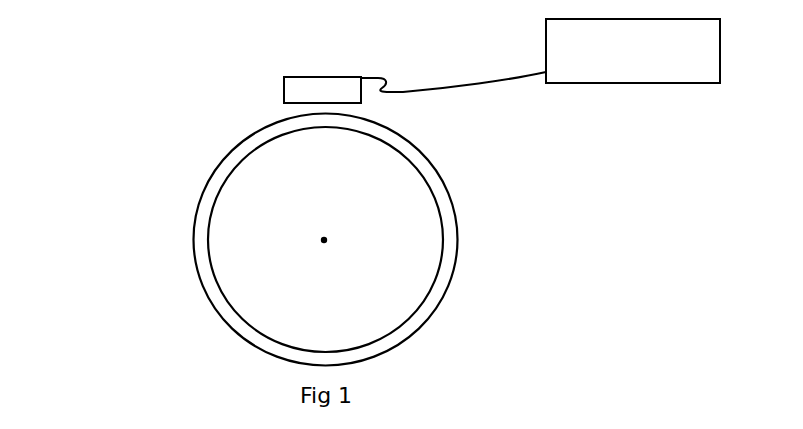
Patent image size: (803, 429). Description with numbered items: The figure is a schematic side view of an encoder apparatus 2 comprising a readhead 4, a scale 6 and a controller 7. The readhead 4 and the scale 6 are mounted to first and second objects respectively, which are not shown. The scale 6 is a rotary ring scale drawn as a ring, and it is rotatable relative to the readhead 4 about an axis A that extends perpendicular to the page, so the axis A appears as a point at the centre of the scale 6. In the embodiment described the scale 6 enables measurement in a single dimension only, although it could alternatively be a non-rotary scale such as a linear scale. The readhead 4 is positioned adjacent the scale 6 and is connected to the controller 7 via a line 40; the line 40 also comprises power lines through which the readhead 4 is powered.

The encoder apparatus 2 is at (128, 68).
The readhead 4 is at (279, 88).
The scale 6 is at (430, 146).
The controller 7 is at (603, 90).
The line 40 is at (478, 68).
The axis A is at (324, 228).